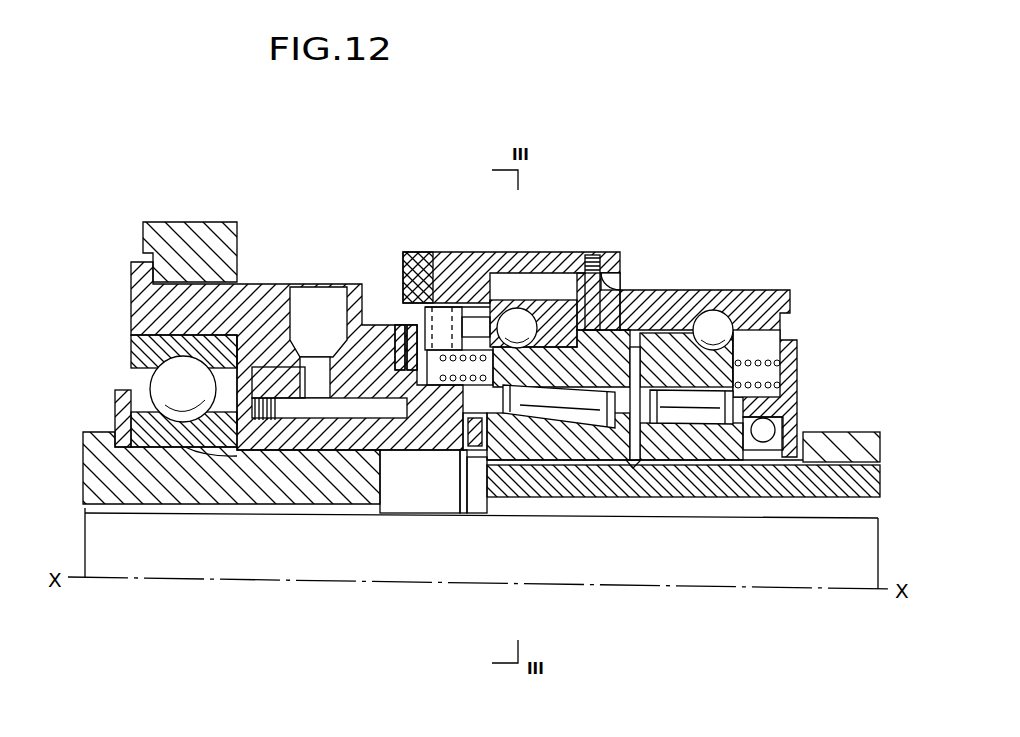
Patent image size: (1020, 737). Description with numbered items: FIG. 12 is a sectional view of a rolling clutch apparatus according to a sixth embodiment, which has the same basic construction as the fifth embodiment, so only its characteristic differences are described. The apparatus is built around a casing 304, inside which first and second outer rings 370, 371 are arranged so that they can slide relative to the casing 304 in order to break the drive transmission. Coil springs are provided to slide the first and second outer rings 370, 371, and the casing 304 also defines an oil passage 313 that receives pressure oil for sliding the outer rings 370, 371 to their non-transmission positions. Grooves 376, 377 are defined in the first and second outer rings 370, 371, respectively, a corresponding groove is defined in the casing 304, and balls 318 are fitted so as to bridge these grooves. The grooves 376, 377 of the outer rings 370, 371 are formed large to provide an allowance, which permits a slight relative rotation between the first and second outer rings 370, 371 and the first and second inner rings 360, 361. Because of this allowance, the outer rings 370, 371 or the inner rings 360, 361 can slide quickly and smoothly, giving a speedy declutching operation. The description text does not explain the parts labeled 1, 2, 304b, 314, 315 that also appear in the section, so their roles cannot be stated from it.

The housing 1 is at (97, 443).
The shaft 2 is at (866, 488).
The casing 304 is at (782, 292).
The ring flange 304b is at (500, 322).
The oil passage 313 is at (501, 248).
The plate 314 is at (392, 330).
The spring 315 is at (762, 365).
The balls 318 is at (535, 318).
The first inner ring 360 is at (507, 513).
The second inner ring 361 is at (772, 500).
The first outer ring 370 is at (640, 292).
The second outer ring 371 is at (684, 330).
The groove 376 is at (465, 350).
The groove 377 is at (733, 345).